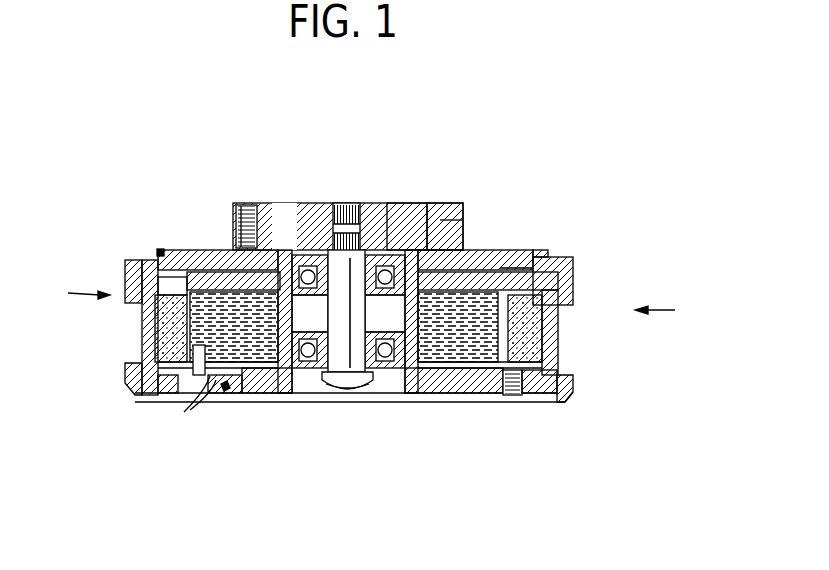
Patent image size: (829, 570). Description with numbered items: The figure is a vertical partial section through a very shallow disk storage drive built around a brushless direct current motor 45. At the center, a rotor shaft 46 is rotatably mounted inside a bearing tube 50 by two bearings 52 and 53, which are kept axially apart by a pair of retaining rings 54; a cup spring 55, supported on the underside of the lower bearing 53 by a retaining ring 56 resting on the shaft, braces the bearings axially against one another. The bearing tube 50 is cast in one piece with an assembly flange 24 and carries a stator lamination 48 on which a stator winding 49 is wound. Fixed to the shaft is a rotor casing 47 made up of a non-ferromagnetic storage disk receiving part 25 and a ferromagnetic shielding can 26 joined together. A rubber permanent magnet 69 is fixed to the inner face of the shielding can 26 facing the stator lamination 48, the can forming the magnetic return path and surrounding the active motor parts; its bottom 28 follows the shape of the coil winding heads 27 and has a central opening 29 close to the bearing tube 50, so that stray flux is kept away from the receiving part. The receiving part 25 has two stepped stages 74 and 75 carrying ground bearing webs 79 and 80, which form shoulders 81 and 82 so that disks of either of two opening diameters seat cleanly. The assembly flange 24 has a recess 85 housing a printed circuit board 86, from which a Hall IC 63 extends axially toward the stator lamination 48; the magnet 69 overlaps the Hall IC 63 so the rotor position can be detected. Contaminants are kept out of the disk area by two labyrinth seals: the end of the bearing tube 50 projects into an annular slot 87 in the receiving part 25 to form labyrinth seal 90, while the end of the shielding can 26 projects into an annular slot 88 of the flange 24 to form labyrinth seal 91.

The assembly flange 24 is at (568, 400).
The storage disk receiving part 25 is at (445, 225).
The shielding can 26 is at (150, 330).
The coil winding heads 27 is at (500, 252).
The bottom 28 is at (163, 252).
The central opening 29 is at (470, 270).
The brushless direct current motor 45 is at (670, 306).
The rotor shaft 46 is at (347, 203).
The rotor casing 47 is at (76, 284).
The stator lamination 48 is at (537, 332).
The stator winding 49 is at (480, 400).
The bearing tube 50 is at (553, 310).
The bearing 52 is at (393, 245).
The bearing 53 is at (392, 372).
The retaining rings 54 is at (290, 251).
The cup spring 55 is at (375, 372).
The retaining ring 56 is at (325, 390).
The Hall IC 63 is at (148, 402).
The permanent magnet 69 is at (162, 338).
The stepped stage 74 is at (548, 252).
The stepped stage 75 is at (238, 203).
The bearing webs 79 is at (160, 258).
The bearing webs 80 is at (232, 250).
The shoulder 81 is at (557, 257).
The shoulder 82 is at (520, 262).
The recess 85 is at (228, 382).
The printed circuit board 86 is at (178, 407).
The annular slot 87 is at (410, 235).
The annular slot 88 is at (530, 398).
The labyrinth seal 90 is at (300, 240).
The labyrinth seal 91 is at (570, 371).